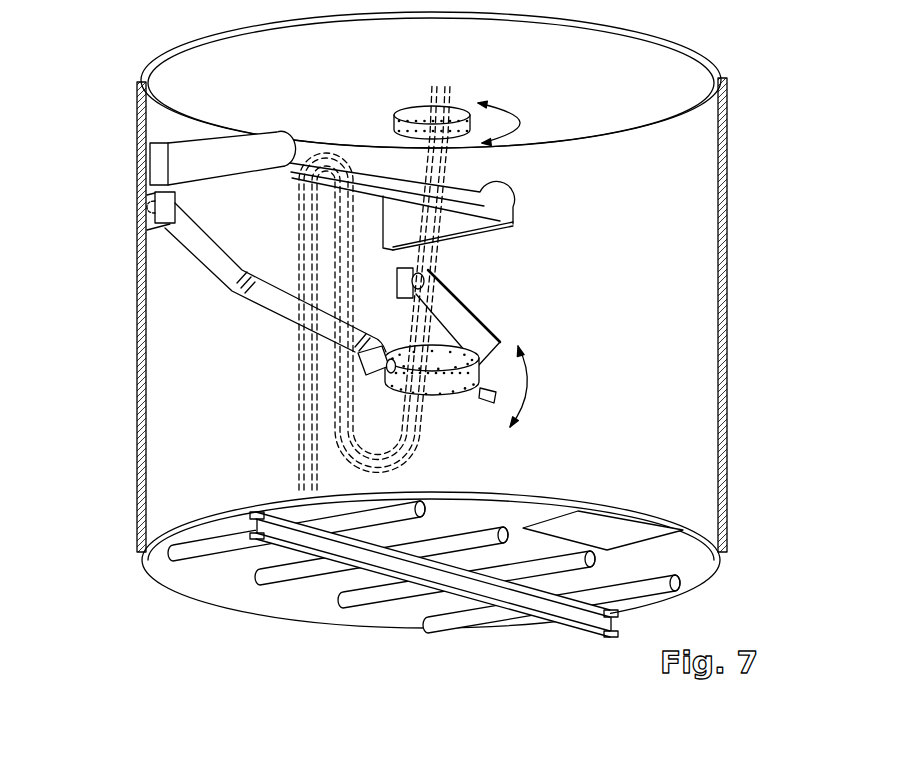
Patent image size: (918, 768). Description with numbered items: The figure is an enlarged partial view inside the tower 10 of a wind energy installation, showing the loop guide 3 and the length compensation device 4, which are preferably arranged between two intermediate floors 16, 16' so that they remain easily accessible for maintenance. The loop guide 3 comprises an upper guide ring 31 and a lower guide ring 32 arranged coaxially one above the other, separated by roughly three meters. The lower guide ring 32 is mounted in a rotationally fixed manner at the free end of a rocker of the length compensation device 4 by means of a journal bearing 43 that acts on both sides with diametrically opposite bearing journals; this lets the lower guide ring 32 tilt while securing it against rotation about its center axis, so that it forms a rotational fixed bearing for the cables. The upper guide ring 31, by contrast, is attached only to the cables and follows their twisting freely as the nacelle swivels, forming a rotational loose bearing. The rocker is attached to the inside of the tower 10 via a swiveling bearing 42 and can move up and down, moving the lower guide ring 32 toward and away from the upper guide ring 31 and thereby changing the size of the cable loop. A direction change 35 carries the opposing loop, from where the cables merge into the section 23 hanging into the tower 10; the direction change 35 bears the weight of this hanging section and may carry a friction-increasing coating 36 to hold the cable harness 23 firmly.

The tower 10 is at (723, 185).
The intermediate floor 16 is at (457, 564).
The intermediate floor 16' is at (467, 83).
The loop guide 3 is at (442, 229).
The length compensation device 4 is at (203, 292).
The section hanging into the tower 23 is at (308, 447).
The upper guide ring 31 is at (398, 113).
The lower guide ring 32 is at (457, 345).
The direction change 35 is at (192, 150).
The coating 36 is at (370, 172).
The swiveling bearing 42 is at (150, 208).
The journal bearing 43 is at (357, 357).